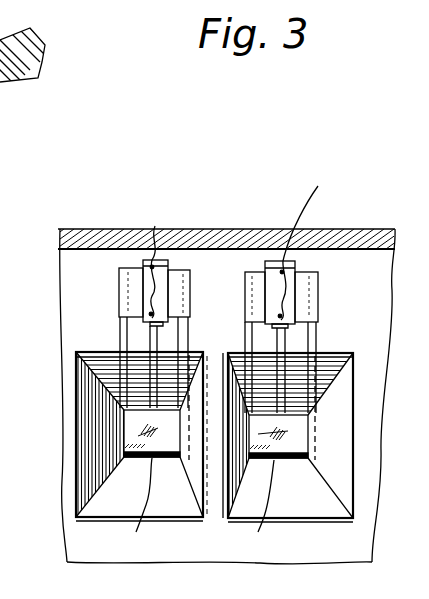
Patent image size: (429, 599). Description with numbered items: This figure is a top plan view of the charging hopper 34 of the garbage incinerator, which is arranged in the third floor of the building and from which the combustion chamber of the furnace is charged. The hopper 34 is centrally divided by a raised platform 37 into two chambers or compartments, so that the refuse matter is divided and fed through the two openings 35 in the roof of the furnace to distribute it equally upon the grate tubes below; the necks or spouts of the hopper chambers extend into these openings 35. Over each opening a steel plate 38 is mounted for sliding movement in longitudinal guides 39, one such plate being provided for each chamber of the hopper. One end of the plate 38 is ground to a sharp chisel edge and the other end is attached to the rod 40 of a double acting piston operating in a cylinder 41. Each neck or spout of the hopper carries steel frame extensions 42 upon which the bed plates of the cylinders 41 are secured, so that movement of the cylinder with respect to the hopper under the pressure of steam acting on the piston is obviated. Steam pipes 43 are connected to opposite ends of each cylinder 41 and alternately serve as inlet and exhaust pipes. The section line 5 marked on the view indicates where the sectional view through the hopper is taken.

The section line 5— 5 is at (265, 407).
The hopper 34 is at (102, 352).
The openings 35 is at (258, 532).
The raised platform 37 is at (213, 372).
The steel plate 38 is at (140, 432).
The longitudinal guides 39 is at (178, 333).
The rod 40 is at (127, 322).
The cylinder 41 is at (142, 283).
The steel frame extensions 42 is at (252, 326).
The steam pipes 43 is at (238, 242).